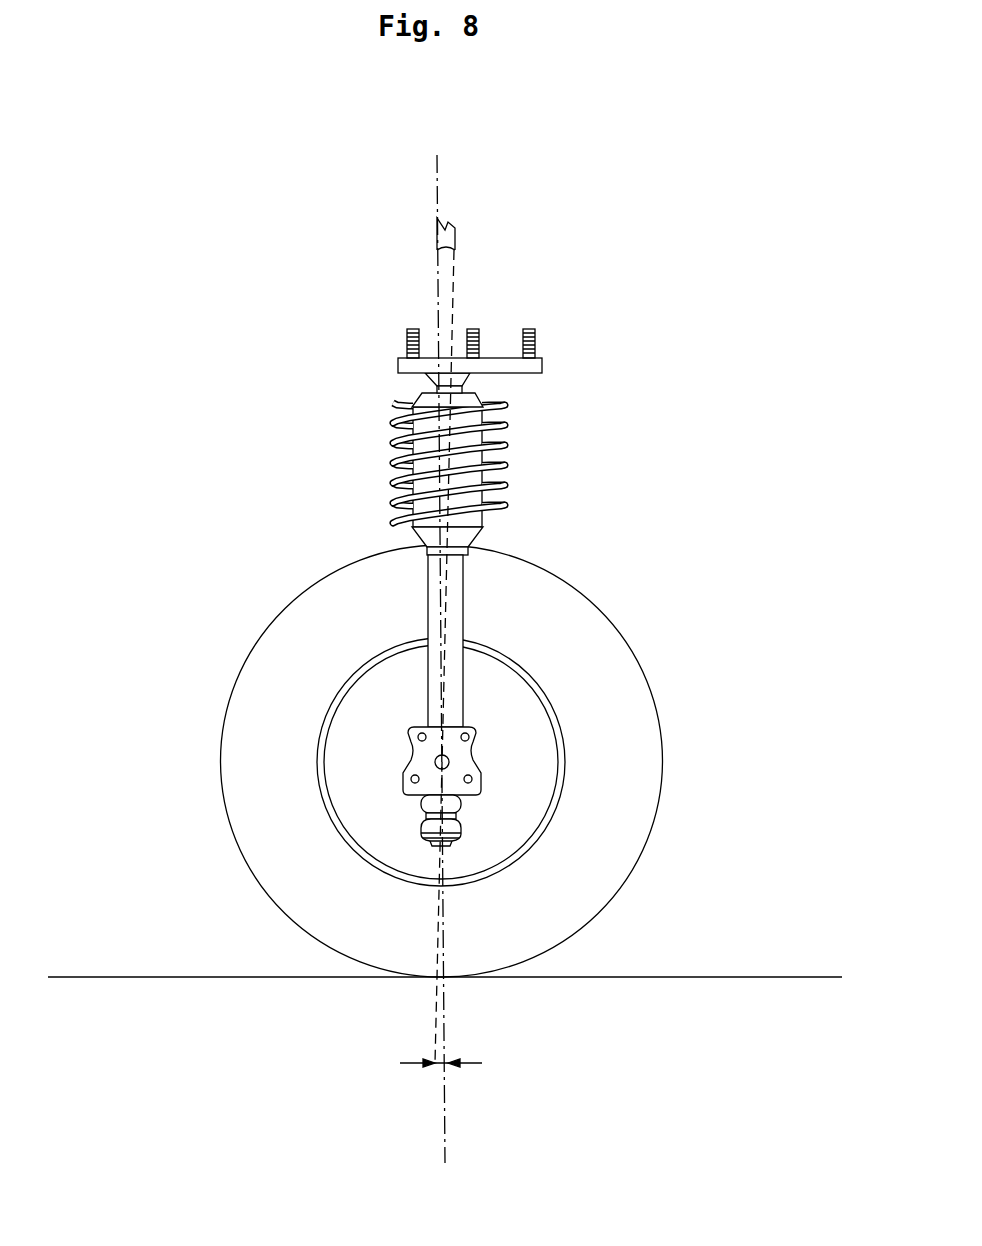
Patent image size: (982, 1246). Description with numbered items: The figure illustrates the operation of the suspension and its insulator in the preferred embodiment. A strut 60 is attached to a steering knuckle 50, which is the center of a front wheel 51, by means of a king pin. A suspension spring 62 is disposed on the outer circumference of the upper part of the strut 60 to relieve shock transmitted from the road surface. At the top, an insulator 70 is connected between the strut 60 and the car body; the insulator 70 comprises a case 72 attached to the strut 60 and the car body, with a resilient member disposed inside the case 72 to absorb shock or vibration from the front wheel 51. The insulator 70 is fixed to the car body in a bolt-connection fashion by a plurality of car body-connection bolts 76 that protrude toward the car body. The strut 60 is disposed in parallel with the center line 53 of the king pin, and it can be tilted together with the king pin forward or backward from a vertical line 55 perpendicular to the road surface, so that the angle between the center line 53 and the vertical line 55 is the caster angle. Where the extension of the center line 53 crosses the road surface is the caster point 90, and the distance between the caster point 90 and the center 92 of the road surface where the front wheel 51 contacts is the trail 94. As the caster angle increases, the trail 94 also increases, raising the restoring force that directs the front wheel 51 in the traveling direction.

The steering knuckle 50 is at (462, 752).
The front wheel 51 is at (637, 820).
The center line of the king pin 53 is at (453, 296).
The vertical line 55 is at (436, 208).
The strut 60 is at (465, 562).
The suspension spring 62 is at (503, 443).
The insulator 70 is at (522, 308).
The case 72 is at (533, 367).
The car body-connection bolts 76 is at (536, 333).
The caster point 90 is at (433, 980).
The center of the road surface where the front wheel contacts 92 is at (446, 978).
The trail 94 is at (441, 1078).